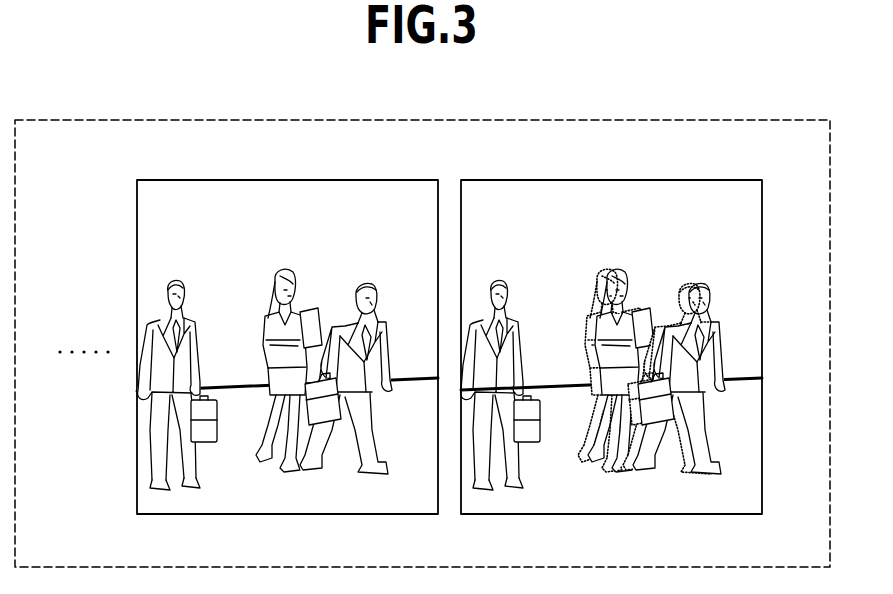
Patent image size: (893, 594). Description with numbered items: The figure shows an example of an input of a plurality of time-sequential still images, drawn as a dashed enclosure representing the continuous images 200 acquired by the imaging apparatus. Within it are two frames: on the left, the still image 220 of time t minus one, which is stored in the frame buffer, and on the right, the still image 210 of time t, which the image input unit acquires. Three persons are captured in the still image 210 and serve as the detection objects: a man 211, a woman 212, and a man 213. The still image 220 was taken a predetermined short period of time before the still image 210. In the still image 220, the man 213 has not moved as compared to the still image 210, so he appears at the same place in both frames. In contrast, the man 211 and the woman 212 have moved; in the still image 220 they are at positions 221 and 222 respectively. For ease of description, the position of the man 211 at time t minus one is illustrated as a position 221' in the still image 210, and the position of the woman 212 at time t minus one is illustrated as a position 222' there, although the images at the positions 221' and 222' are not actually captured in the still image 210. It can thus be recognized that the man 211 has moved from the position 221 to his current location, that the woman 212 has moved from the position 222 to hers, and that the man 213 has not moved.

The continuous images 200 is at (104, 120).
The still image of time t−1 220 is at (137, 202).
The still image of time t 210 is at (612, 180).
The man 213 is at (165, 295).
The position 221 is at (346, 308).
The position 222 is at (195, 353).
The position 221' is at (726, 346).
The position 222' is at (666, 307).
The man 211 is at (714, 331).
The woman 212 is at (622, 270).